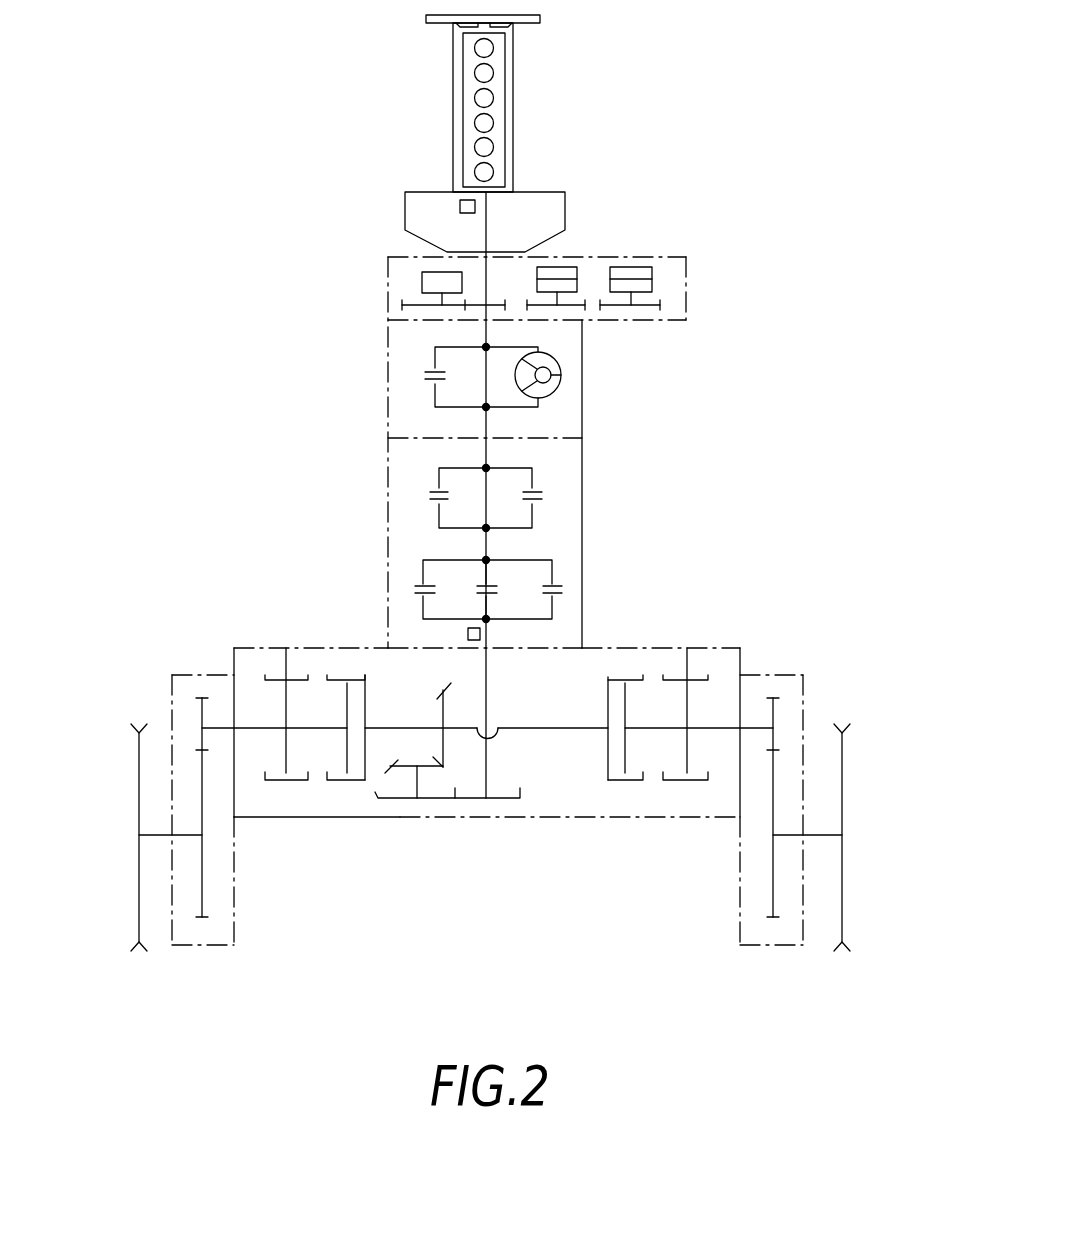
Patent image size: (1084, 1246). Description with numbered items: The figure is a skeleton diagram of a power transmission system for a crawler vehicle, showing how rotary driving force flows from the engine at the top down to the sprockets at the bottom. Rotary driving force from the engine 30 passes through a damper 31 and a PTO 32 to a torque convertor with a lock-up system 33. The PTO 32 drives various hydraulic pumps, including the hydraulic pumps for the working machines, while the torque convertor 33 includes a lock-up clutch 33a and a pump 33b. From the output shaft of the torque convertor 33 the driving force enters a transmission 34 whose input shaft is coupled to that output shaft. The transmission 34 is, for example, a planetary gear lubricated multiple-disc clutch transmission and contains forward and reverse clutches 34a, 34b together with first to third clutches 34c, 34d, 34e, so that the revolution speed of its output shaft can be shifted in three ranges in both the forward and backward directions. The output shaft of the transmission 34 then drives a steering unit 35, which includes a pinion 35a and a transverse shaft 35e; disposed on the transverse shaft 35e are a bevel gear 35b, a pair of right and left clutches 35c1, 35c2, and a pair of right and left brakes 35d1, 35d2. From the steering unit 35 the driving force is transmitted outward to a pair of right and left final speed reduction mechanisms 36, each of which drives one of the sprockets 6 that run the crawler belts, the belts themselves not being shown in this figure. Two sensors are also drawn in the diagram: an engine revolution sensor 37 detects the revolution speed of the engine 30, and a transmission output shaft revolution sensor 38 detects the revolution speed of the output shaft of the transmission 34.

The engine 30 is at (513, 82).
The damper 31 is at (484, 206).
The engine revolution sensor 37 is at (458, 212).
The PTO 32 is at (678, 256).
The torque convertor with a lock-up system 33 is at (492, 484).
The lock-up clutch 33a is at (427, 377).
The pump 33b is at (555, 363).
The transmission 34 is at (495, 547).
The forward clutch 34a is at (427, 495).
The reverse clutch 34b is at (537, 490).
The first clutch 34c is at (413, 590).
The second clutch 34d is at (480, 584).
The third clutch 34e is at (562, 590).
The transmission output shaft revolution sensor 38 is at (466, 636).
The steering unit 35 is at (505, 753).
The pinion 35a is at (433, 768).
The bevel gear 35b is at (445, 742).
The right clutch 35c1 is at (352, 783).
The left clutch 35c2 is at (640, 783).
The right brake 35d1 is at (282, 783).
The left brake 35d2 is at (697, 783).
The transverse shaft 35e is at (583, 730).
The final speed reduction mechanism 36 is at (215, 947).
The sprocket 6 is at (138, 806).